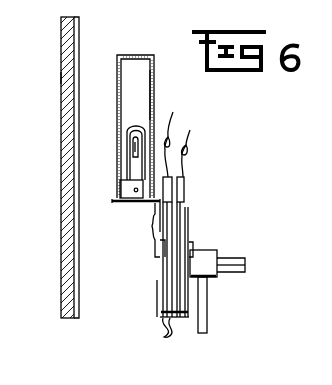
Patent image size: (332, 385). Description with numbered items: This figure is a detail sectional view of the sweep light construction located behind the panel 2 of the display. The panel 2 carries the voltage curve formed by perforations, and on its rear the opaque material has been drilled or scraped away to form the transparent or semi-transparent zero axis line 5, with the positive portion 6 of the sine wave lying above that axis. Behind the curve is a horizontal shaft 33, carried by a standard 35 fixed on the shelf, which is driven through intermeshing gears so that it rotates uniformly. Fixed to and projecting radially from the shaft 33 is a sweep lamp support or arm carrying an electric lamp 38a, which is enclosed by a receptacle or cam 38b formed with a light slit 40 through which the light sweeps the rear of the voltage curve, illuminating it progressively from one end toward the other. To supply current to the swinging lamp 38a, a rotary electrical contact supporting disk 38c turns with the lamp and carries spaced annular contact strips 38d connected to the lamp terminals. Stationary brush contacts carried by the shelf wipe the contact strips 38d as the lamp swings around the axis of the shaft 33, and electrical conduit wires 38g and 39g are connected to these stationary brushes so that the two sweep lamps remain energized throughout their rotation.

The panel 2 is at (61, 197).
The zero axis line 5 is at (69, 256).
The positive portion of the sine wave 6 is at (66, 77).
The light slit 40 is at (118, 79).
The electric lamp 38a is at (138, 127).
The receptacle or cam 38b is at (154, 88).
The electrical conduit wire 38g is at (173, 119).
The electrical conduit wire 39g is at (190, 144).
The rotary electrical contact supporting disk 38c is at (158, 285).
The annular contact strip 38d is at (156, 340).
The horizontal shaft 33 is at (232, 262).
The standard 35 is at (207, 318).